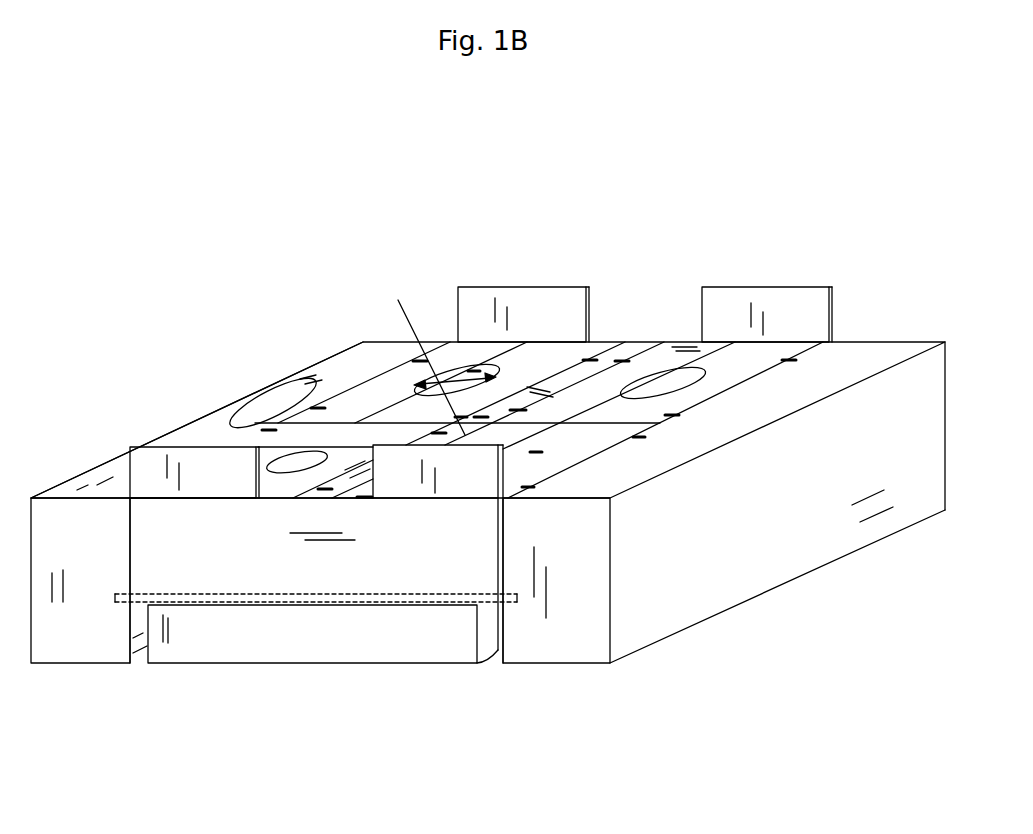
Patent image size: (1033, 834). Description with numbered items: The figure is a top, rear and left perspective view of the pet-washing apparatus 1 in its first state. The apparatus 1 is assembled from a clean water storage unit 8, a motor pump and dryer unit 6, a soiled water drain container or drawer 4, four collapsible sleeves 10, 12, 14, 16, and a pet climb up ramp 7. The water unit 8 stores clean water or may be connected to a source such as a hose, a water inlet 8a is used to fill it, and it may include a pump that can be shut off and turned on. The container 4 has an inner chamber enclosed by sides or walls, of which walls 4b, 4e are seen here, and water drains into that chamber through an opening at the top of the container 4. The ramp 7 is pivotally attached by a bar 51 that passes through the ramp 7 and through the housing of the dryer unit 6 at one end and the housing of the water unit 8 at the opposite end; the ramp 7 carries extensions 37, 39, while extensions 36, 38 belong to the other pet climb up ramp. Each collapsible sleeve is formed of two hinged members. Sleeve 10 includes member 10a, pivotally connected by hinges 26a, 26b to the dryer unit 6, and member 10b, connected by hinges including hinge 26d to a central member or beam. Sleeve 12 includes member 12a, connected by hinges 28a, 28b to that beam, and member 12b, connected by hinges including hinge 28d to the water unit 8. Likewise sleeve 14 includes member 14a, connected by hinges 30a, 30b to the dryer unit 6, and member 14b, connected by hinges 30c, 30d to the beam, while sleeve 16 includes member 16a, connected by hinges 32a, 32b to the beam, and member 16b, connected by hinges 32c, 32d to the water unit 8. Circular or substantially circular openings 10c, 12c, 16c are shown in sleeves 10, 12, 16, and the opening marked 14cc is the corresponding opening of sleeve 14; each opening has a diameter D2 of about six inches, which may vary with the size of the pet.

The apparatus 1 is at (666, 259).
The soiled water drain container 4 is at (392, 647).
The side or wall 4b is at (278, 647).
The side or wall 4e is at (488, 652).
The motor pump and dryer unit 6 is at (718, 572).
The pet climb up ramp 7 is at (320, 580).
The clean water storage unit 8 is at (218, 420).
The water inlet 8a is at (275, 396).
The collapsible sleeve 10 is at (583, 444).
The sleeve or member 10a is at (501, 482).
The sleeve or member 10b is at (480, 442).
The circular opening 10c is at (538, 452).
The collapsible sleeve 12 is at (300, 441).
The sleeve or member 12a is at (340, 451).
The sleeve or member 12b is at (263, 452).
The circular opening 12c is at (269, 472).
The collapsible sleeve 14 is at (665, 370).
The sleeve or member 14a is at (714, 376).
The sleeve or member 14b is at (561, 409).
The third channel section 14cc is at (645, 392).
The collapsible sleeve 16 is at (396, 393).
The sleeve or member 16a is at (353, 414).
The sleeve or member 16b is at (398, 427).
The circular opening 16c is at (478, 371).
The hinge 26a is at (532, 487).
The hinge 26b is at (638, 439).
The hinge 26d is at (445, 405).
The hinge 28a is at (327, 487).
The hinge 28b is at (436, 433).
The hinge 28d is at (264, 431).
The hinge 30a is at (670, 418).
The hinge 30b is at (792, 361).
The hinge 30c is at (523, 411).
The hinge 30d is at (622, 364).
The hinge 32a is at (479, 405).
The hinge 32b is at (584, 360).
The hinge 32c is at (318, 405).
The hinge 32d is at (414, 361).
The extension 36 is at (795, 310).
The extension 37 is at (451, 487).
The extension 38 is at (520, 297).
The extension 39 is at (203, 487).
The bar 51 is at (163, 597).
The diameter D2 is at (437, 355).